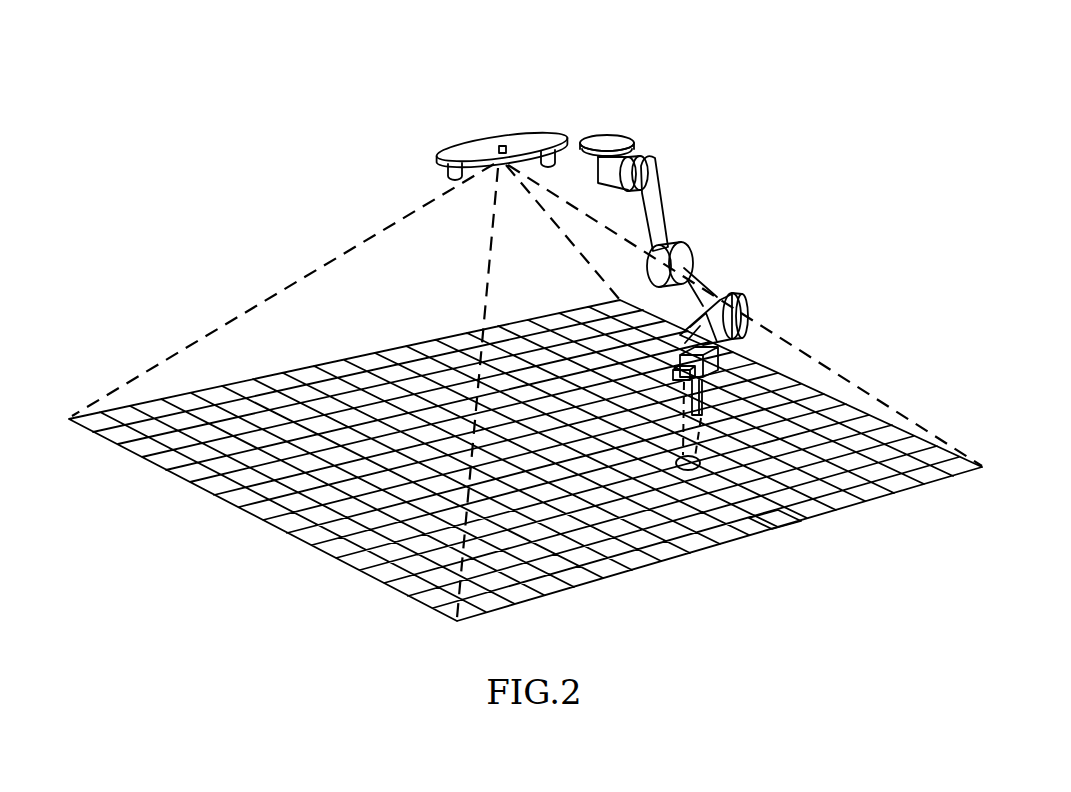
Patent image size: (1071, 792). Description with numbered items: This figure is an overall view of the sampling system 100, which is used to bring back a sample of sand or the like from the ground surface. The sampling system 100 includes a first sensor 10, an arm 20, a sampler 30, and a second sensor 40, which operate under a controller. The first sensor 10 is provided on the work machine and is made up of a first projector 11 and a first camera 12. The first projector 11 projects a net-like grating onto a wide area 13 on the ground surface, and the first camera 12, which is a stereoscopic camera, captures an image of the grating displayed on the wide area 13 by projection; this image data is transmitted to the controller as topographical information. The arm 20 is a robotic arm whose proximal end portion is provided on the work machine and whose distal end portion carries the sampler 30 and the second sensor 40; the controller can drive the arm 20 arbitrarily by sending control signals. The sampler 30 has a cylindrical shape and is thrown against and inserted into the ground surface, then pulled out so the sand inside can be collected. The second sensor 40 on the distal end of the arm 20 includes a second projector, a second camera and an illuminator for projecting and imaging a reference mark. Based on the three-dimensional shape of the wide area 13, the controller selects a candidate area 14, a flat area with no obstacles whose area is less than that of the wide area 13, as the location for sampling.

The sampling system 100 is at (670, 108).
The first sensor 10 is at (481, 136).
The first projector 11 is at (504, 145).
The first camera 12 is at (446, 173).
The arm 20 is at (662, 220).
The sampler 30 is at (758, 377).
The wide area 13 is at (788, 516).
The candidate area 14 is at (694, 470).
The second sensor 40 is at (720, 352).